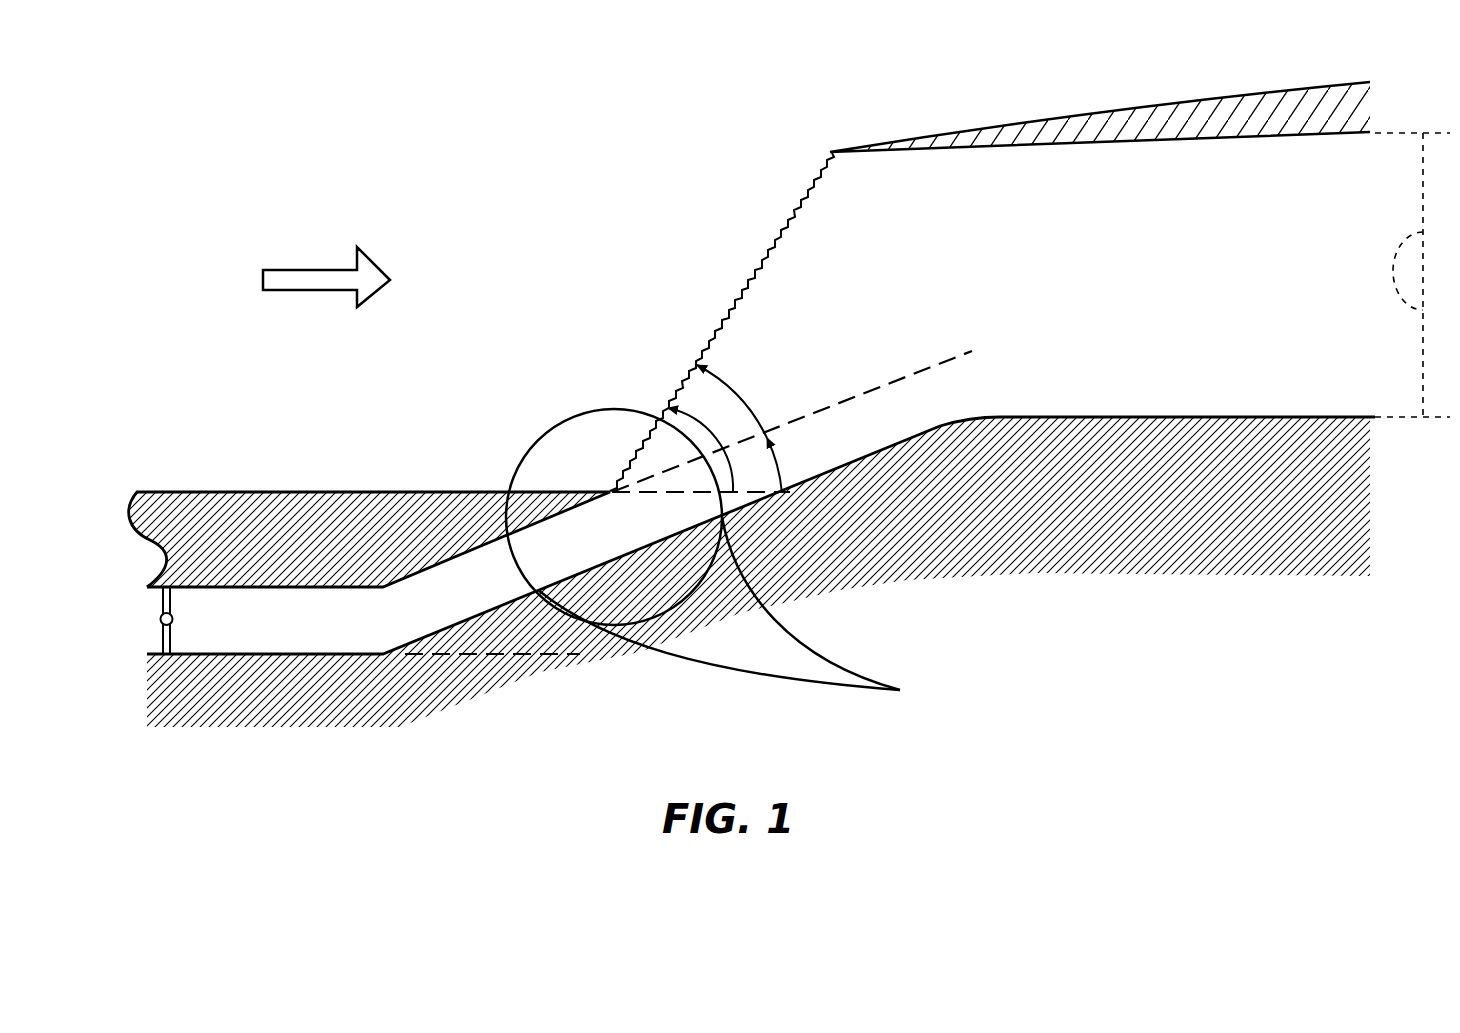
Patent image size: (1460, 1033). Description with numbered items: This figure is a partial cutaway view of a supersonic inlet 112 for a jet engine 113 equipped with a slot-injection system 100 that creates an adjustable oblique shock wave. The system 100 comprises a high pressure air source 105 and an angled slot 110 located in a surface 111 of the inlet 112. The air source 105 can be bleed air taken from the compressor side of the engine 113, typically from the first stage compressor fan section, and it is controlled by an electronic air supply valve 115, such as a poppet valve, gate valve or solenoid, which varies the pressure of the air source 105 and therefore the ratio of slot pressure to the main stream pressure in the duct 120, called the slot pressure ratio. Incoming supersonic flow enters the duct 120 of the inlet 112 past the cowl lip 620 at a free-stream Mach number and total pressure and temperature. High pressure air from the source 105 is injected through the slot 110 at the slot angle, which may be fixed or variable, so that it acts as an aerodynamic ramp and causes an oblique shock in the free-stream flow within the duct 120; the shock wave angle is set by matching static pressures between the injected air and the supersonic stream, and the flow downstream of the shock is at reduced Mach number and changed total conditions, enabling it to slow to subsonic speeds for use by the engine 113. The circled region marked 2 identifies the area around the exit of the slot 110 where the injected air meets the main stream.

The system 100 is at (340, 125).
The high pressure air source 105 is at (136, 641).
The angled slot 110 is at (369, 573).
The surface 111 is at (985, 545).
The inlet 112 is at (647, 158).
The jet engine 113 is at (1440, 168).
The electronic air supply valve 115 is at (172, 601).
The duct 120 is at (815, 350).
The cowl lip 620 is at (838, 148).
The shock wave 2 is at (716, 556).